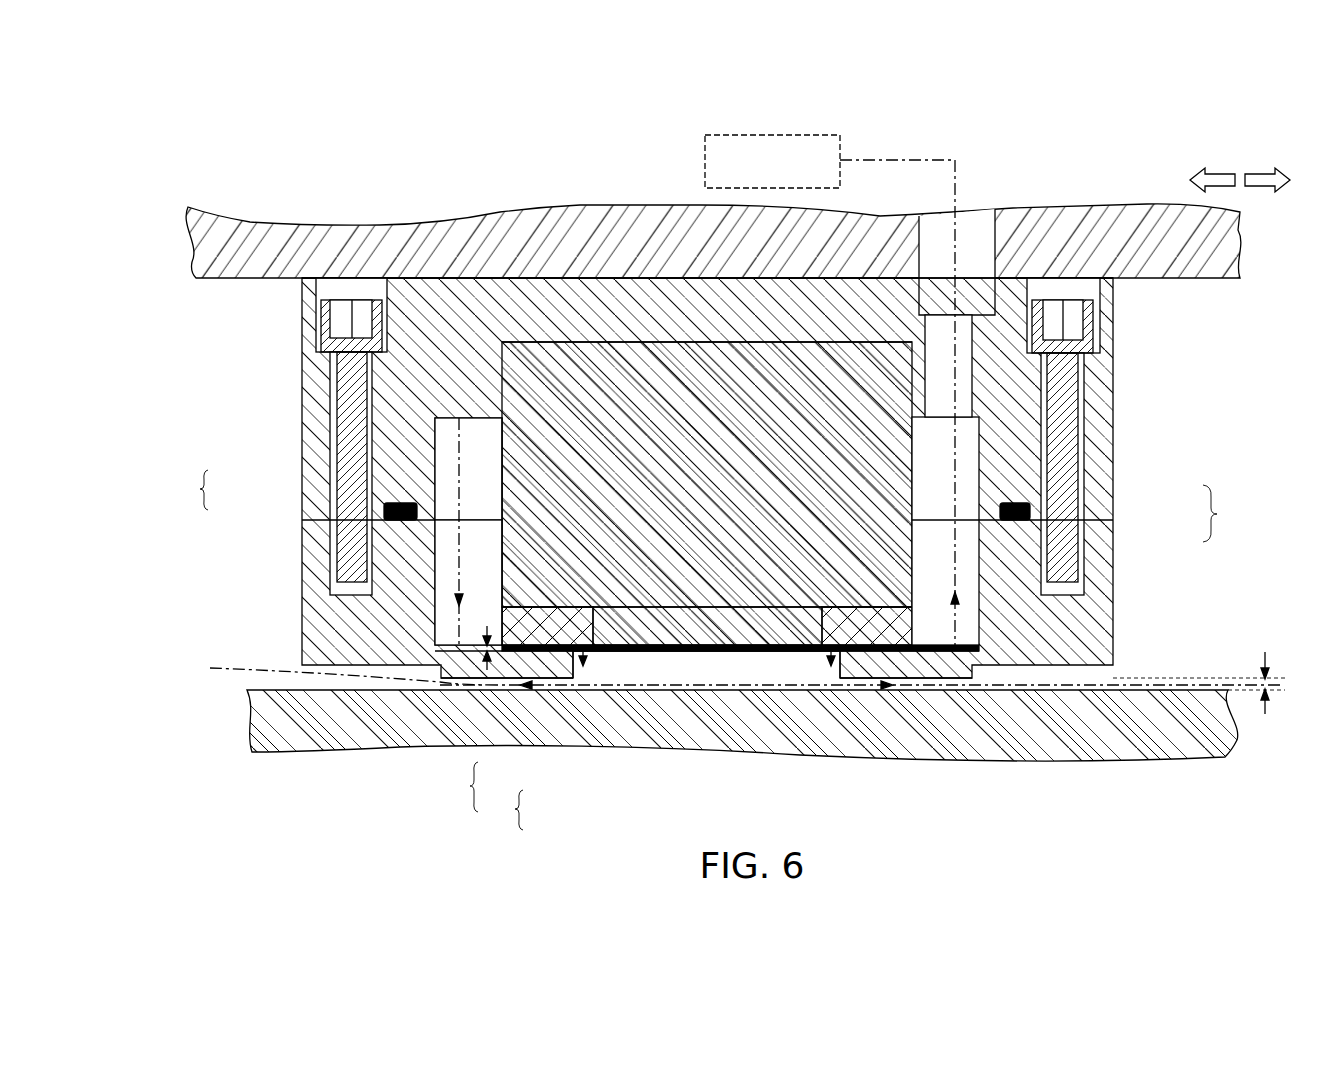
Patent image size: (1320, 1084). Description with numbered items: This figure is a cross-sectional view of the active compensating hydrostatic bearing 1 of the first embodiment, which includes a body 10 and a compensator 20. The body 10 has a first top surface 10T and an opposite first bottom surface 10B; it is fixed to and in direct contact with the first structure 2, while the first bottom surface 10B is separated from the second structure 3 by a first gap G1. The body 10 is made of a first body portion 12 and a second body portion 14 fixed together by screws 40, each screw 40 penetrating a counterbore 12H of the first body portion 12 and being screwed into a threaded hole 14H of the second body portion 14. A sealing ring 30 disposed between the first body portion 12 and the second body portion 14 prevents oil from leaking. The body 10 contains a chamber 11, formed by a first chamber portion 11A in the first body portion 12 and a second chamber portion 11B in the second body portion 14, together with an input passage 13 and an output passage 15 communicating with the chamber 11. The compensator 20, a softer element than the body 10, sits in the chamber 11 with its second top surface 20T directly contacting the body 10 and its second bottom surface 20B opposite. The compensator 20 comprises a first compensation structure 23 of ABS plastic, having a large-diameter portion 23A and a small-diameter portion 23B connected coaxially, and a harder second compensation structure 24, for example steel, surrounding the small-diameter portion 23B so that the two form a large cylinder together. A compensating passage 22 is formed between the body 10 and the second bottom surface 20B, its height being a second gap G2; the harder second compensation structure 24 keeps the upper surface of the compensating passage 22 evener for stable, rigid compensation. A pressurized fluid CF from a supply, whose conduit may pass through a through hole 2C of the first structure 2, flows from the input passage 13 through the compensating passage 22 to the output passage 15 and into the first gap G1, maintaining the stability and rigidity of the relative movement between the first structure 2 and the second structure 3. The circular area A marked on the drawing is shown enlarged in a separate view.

The active compensating hydrostatic bearing 1 is at (278, 376).
The first structure 2 is at (1155, 222).
The through hole 2C is at (983, 228).
The second structure 3 is at (1118, 745).
The body 10 is at (772, 488).
The first top surface 10T is at (513, 278).
The first bottom surface 10B is at (940, 678).
The chamber 11 is at (339, 531).
The first chamber portion 11A is at (450, 502).
The second chamber portion 11B is at (437, 545).
The first body portion 12 is at (1100, 492).
The counterbore 12H is at (1088, 291).
The input passage 13 is at (955, 368).
The second body portion 14 is at (1100, 537).
The threaded hole 14H is at (1082, 583).
The output passage 15 is at (748, 663).
The compensator 20 is at (712, 491).
The second top surface 20T is at (620, 342).
The second bottom surface 20B is at (825, 652).
The compensating passage 22 is at (415, 522).
The first compensation structure 23 is at (735, 722).
The large-diameter portion 23A is at (672, 640).
The small-diameter portion 23B is at (700, 652).
The second compensation structure 24 is at (540, 652).
The sealing ring 30 is at (1033, 525).
The screw 40 is at (1065, 408).
The pressurized fluid CF is at (832, 391).
The first gap G1 is at (1209, 679).
The second gap G2 is at (485, 632).
The circular area A is at (731, 674).